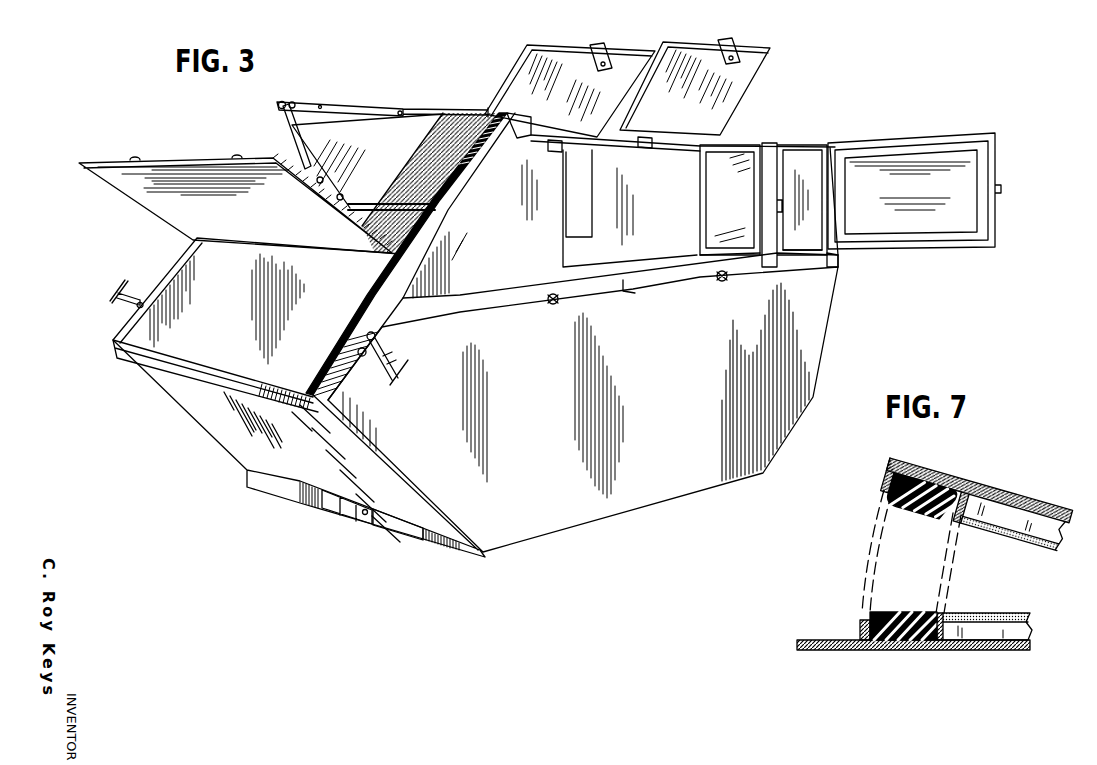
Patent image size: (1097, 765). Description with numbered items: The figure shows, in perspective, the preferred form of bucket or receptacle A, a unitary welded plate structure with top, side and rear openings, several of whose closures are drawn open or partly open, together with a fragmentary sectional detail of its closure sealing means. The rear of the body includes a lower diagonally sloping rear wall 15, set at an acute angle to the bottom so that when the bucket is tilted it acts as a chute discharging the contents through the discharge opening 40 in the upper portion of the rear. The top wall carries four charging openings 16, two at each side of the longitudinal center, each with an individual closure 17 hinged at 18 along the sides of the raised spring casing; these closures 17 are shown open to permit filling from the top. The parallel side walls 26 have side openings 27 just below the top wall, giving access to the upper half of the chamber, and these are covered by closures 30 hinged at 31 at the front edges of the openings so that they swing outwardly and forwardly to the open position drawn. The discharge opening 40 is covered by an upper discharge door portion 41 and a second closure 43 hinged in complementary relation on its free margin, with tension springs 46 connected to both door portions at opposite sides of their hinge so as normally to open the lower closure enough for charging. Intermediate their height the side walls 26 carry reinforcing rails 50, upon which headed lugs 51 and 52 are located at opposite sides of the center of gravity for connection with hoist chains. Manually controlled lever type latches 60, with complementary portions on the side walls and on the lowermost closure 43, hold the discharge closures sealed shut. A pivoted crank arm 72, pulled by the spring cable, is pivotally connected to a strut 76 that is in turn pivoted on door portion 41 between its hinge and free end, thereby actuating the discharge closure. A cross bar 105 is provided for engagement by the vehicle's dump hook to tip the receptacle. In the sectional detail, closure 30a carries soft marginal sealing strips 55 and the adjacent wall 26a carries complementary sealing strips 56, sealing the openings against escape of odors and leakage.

In FIG. 3, the rear wall 15 is at (486, 335).
In FIG. 3, the charging openings 16 is at (548, 146).
In FIG. 3, the closures 17 is at (517, 70).
In FIG. 3, the hinge 18 is at (647, 140).
In FIG. 3, the side walls 26 is at (793, 338).
In FIG. 7, the walls 26a is at (914, 584).
In FIG. 3, the side openings 27 is at (572, 250).
In FIG. 3, the closures 30 is at (763, 143).
In FIG. 7, the closure 30a is at (975, 505).
In FIG. 3, the hinge 31 is at (707, 197).
In FIG. 3, the discharge opening 40 is at (177, 357).
In FIG. 3, the upper discharge door portion 41 is at (367, 161).
In FIG. 3, the second closure 43 is at (157, 198).
In FIG. 3, the springs 46 is at (395, 208).
In FIG. 3, the reinforcing rails 50 is at (628, 290).
In FIG. 3, the headed lug 51 is at (553, 304).
In FIG. 3, the headed lug 52 is at (722, 280).
In FIG. 7, the sealing strips 55 is at (927, 514).
In FIG. 7, the sealing strips 56 is at (920, 610).
In FIG. 3, the latches 60 is at (118, 298).
In FIG. 3, the crank arm 72 is at (347, 107).
In FIG. 3, the strut 76 is at (303, 138).
In FIG. 3, the cross bar 105 is at (343, 513).
In FIG. 3, the receptacle A is at (810, 302).